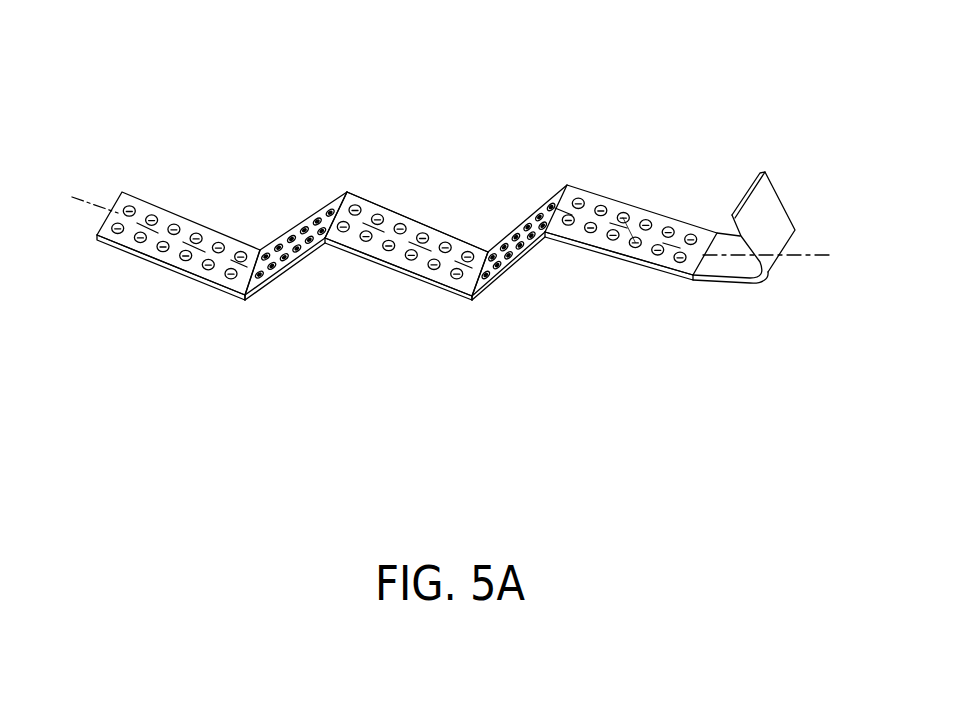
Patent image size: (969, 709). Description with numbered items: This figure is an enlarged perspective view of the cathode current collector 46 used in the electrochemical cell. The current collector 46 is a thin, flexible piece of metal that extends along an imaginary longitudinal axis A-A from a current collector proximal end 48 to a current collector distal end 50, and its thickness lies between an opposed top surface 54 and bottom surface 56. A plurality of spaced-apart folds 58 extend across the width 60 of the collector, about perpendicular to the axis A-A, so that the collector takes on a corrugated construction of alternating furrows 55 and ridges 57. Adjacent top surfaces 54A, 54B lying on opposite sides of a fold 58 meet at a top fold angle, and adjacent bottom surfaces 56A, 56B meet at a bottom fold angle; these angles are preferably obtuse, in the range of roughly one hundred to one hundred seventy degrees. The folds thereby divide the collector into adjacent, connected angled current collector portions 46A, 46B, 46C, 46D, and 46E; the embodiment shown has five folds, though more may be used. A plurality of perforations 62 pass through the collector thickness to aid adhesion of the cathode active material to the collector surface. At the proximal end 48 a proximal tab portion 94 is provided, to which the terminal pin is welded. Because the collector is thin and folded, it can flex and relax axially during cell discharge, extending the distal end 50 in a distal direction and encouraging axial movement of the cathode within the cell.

The cathode current collector 46 is at (140, 141).
The angled current collector portion 46A is at (618, 250).
The angled current collector portion 46B is at (500, 282).
The angled current collector portion 46C is at (359, 255).
The angled current collector portion 46D is at (287, 278).
The angled current collector portion 46E is at (125, 259).
The current collector proximal end 48 is at (663, 220).
The current collector distal end 50 is at (165, 222).
The top surface 54 is at (378, 200).
The top surface 54A is at (412, 230).
The top surface 54B is at (308, 218).
The furrow 55 is at (469, 302).
The bottom surface 56 is at (402, 290).
The bottom surface 56A is at (260, 298).
The bottom surface 56B is at (175, 274).
The ridge 57 is at (342, 197).
The fold 58 is at (262, 252).
The width 60 is at (630, 229).
The perforations 62 is at (220, 245).
The proximal tab portion 94 is at (773, 194).